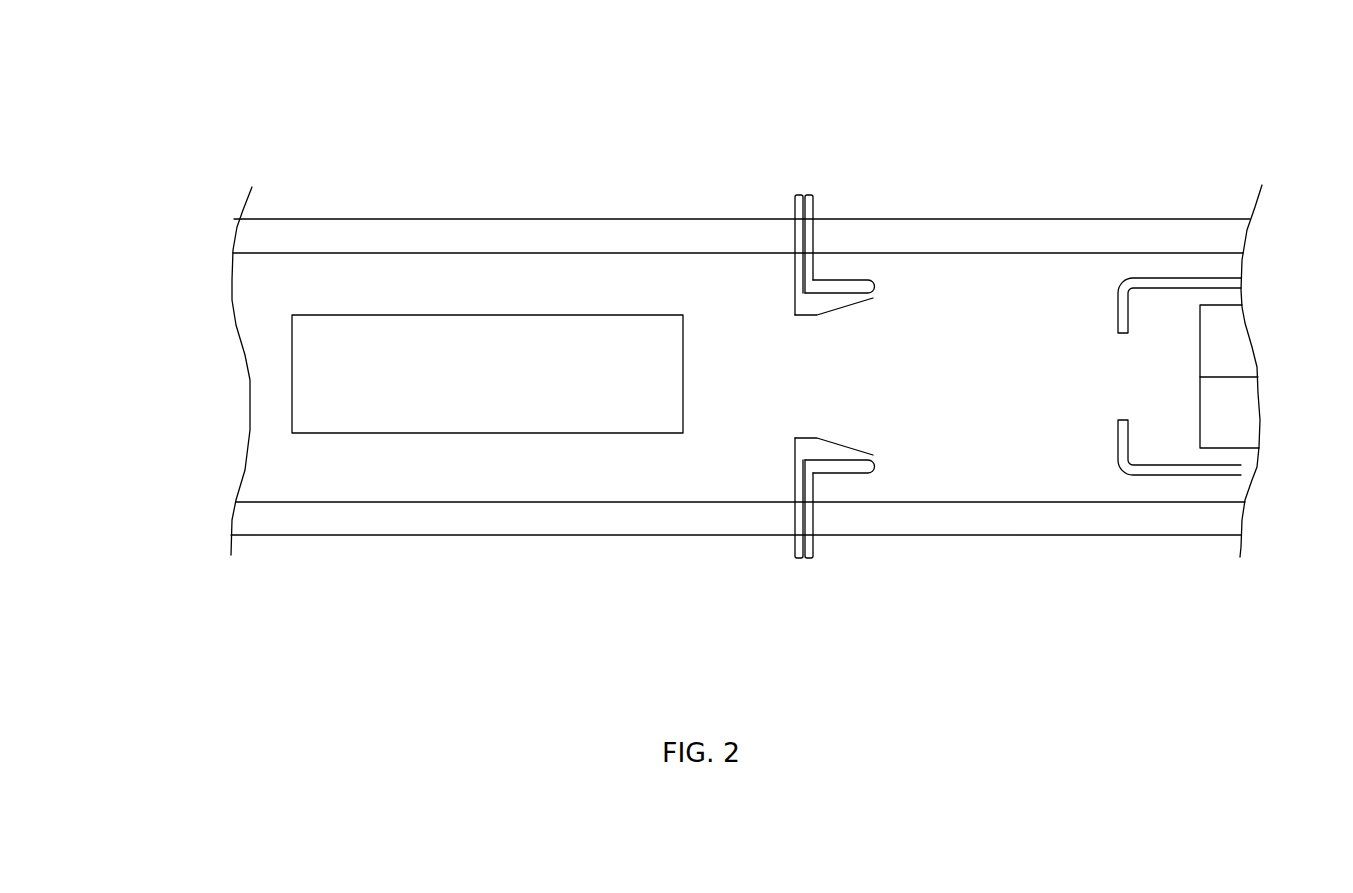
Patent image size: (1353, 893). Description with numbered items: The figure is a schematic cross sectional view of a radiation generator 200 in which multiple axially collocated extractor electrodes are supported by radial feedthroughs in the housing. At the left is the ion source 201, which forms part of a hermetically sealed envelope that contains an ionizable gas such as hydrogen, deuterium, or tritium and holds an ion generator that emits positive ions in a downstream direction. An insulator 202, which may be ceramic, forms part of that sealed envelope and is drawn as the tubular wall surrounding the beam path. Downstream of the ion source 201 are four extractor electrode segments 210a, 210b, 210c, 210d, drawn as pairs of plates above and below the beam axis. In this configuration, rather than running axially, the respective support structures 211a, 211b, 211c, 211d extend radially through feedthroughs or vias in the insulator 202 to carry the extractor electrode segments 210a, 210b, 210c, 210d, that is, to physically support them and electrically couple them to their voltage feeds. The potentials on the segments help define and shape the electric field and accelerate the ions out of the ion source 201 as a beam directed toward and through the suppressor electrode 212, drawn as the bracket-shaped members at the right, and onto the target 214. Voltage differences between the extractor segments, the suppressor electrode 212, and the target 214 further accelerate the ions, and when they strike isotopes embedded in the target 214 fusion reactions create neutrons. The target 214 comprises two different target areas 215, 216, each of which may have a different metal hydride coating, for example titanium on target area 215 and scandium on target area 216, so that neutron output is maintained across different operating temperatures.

The radiation generator 200 is at (231, 85).
The ion source 201 is at (465, 313).
The insulator 202 is at (235, 228).
The extractor electrode segment 210a is at (794, 228).
The extractor electrode segment 210b is at (830, 280).
The extractor electrode segment 210c is at (795, 443).
The extractor electrode segment 210d is at (813, 473).
The support structure 211a is at (795, 305).
The support structure 211b is at (815, 227).
The support structure 211c is at (795, 523).
The support structure 211d is at (815, 523).
The suppressor electrode 212 is at (1128, 280).
The target 214 is at (1217, 295).
The target area 215 is at (1235, 343).
The target area 216 is at (1252, 417).